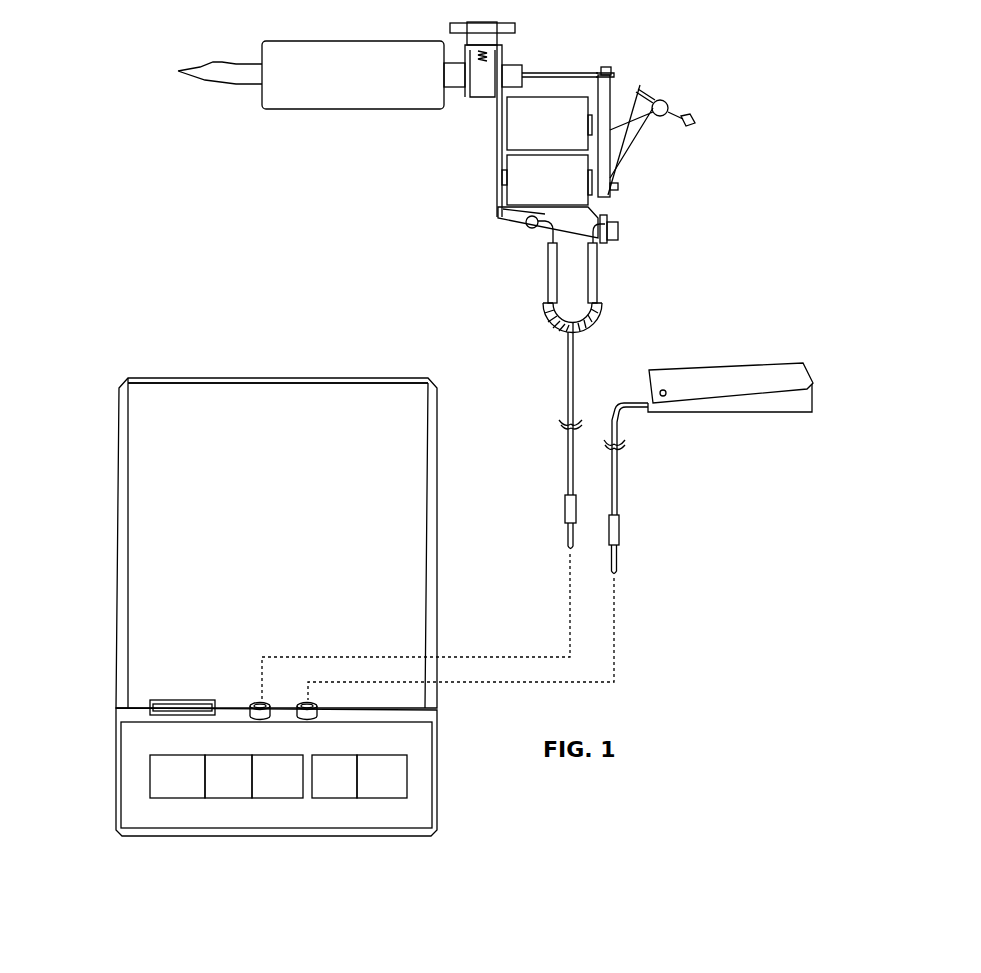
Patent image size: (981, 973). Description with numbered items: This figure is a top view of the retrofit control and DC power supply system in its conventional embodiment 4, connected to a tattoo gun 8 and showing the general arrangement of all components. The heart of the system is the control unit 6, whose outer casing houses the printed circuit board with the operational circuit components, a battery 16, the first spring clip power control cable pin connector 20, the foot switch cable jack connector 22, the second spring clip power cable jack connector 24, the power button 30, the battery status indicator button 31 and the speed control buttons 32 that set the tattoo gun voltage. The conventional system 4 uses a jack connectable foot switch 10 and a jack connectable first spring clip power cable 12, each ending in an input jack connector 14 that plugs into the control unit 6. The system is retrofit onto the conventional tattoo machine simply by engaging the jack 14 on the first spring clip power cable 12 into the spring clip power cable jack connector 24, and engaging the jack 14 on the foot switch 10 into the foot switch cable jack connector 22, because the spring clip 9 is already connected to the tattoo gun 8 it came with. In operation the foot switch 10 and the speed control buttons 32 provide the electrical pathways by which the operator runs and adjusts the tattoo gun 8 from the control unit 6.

The conventional embodiment 4 is at (231, 351).
The control unit 6 is at (437, 777).
The tattoo gun 8 is at (457, 100).
The spring clip 9 is at (598, 278).
The foot switch 10 is at (743, 412).
The first spring clip power cable 12 is at (563, 375).
The input jack connector 14 is at (560, 502).
The battery 16 is at (320, 398).
The first spring clip power control cable pin connector 20 is at (182, 697).
The foot switch cable jack connector 22 is at (308, 680).
The second spring clip power cable jack connector 24 is at (258, 698).
The power button 30 is at (407, 783).
The battery status indicator button 31 is at (322, 795).
The speed control buttons 32 is at (225, 780).